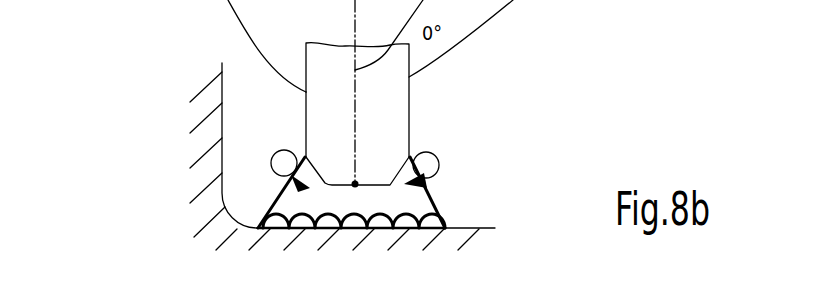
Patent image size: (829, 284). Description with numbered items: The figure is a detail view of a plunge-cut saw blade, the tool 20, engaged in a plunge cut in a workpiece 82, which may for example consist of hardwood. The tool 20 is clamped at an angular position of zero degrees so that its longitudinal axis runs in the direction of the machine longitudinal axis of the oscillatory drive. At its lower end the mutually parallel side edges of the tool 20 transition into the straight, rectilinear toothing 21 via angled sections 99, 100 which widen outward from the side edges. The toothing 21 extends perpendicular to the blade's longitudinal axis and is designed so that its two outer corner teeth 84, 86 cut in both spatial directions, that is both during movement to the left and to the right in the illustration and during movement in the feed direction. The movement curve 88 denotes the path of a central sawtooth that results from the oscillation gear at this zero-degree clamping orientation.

The tool 20 is at (398, 112).
The toothing 21 is at (403, 228).
The workpiece 82 is at (207, 133).
The outer corner tooth 84 is at (437, 205).
The outer corner tooth 86 is at (256, 214).
The movement curve 88 is at (440, 163).
The angled section 99 is at (309, 187).
The angled section 100 is at (420, 180).